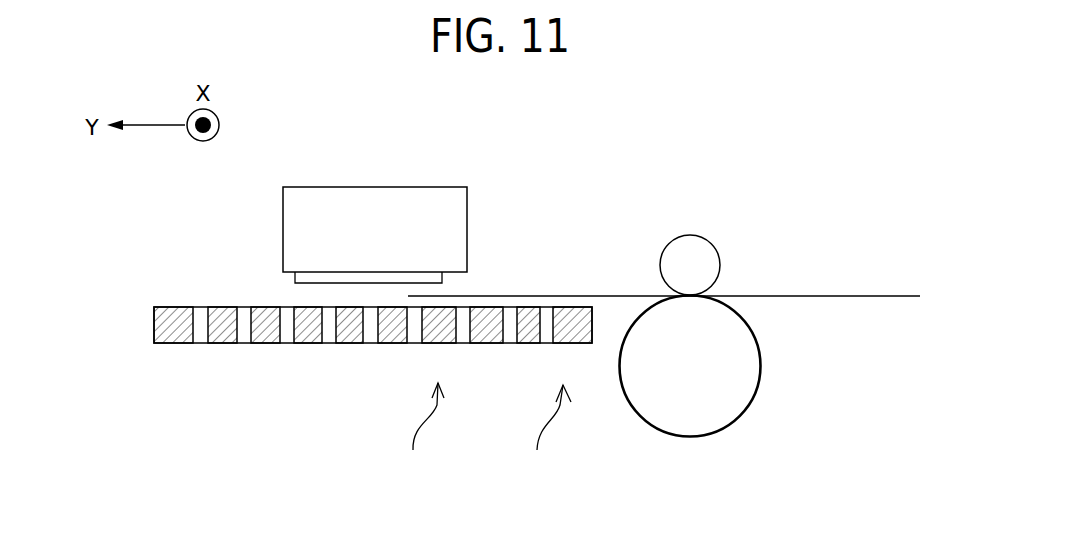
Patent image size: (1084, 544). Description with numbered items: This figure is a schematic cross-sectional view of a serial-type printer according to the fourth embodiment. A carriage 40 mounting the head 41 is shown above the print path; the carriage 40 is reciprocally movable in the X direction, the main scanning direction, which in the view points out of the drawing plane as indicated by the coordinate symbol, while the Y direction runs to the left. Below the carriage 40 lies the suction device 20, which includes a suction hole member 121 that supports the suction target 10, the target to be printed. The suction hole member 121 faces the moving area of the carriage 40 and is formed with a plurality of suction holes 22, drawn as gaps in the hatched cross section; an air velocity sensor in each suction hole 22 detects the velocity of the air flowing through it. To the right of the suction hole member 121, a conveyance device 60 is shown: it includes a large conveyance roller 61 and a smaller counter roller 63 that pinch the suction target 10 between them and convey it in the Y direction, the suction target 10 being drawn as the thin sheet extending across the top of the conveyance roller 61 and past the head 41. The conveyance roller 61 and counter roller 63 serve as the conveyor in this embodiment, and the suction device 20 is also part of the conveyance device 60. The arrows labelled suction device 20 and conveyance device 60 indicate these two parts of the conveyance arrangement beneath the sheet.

The suction target 10 is at (786, 294).
The suction device 20 is at (421, 433).
The suction holes 22 is at (357, 372).
The carriage 40 is at (363, 198).
The head 41 is at (403, 278).
The conveyance device 60 is at (552, 487).
The conveyance roller 61 is at (722, 410).
The counter roller 63 is at (691, 256).
The suction hole member 121 is at (175, 333).